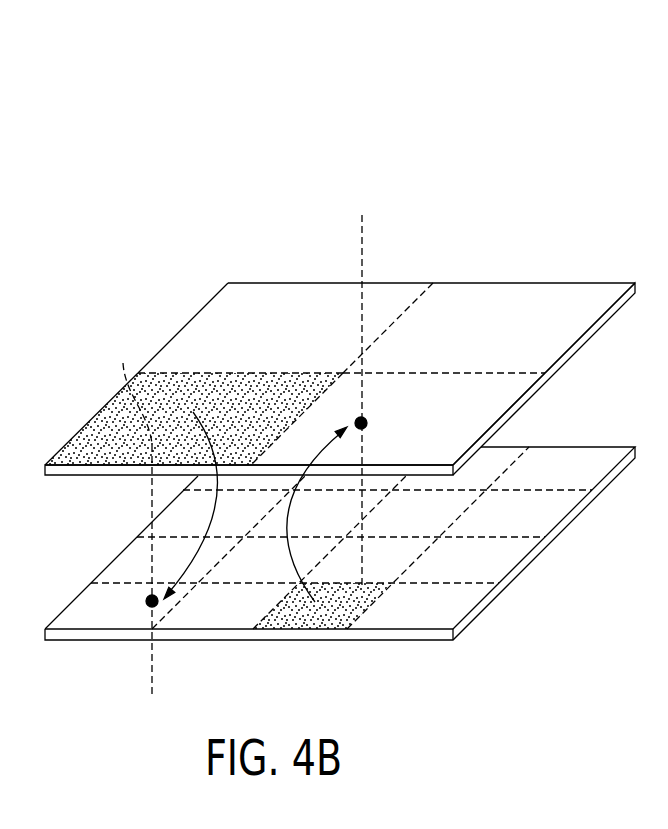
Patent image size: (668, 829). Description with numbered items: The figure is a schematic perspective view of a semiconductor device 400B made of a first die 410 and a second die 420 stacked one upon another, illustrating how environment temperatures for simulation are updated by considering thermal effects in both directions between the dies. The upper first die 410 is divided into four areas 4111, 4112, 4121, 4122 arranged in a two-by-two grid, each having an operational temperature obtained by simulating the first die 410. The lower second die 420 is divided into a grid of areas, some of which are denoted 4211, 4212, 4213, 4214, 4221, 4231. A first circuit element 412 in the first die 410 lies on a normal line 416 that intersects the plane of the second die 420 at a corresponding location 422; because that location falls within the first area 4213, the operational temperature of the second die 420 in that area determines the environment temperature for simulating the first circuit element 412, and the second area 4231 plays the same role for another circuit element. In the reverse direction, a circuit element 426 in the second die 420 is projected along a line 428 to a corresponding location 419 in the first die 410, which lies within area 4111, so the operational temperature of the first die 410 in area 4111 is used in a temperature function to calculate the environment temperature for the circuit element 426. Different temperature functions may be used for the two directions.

The semiconductor device 400B is at (555, 118).
The first die 410 is at (597, 282).
The area of first die 4121 is at (210, 323).
The area of first die 4122 is at (488, 300).
The area of first die 4111 is at (98, 433).
The area of first die 4112 is at (515, 383).
The first circuit element 412 is at (368, 425).
The normal line 416 is at (370, 247).
The corresponding location 419 is at (130, 391).
The second die 420 is at (618, 448).
The area of second die 4211 is at (92, 623).
The area of second die 4212 is at (212, 623).
The first area 4213 is at (315, 618).
The area of second die 4214 is at (418, 618).
The area of second die 4221 is at (123, 573).
The second area 4231 is at (173, 525).
The corresponding location 422 is at (400, 580).
The circuit element 426 is at (143, 600).
The second axis 428 is at (147, 683).